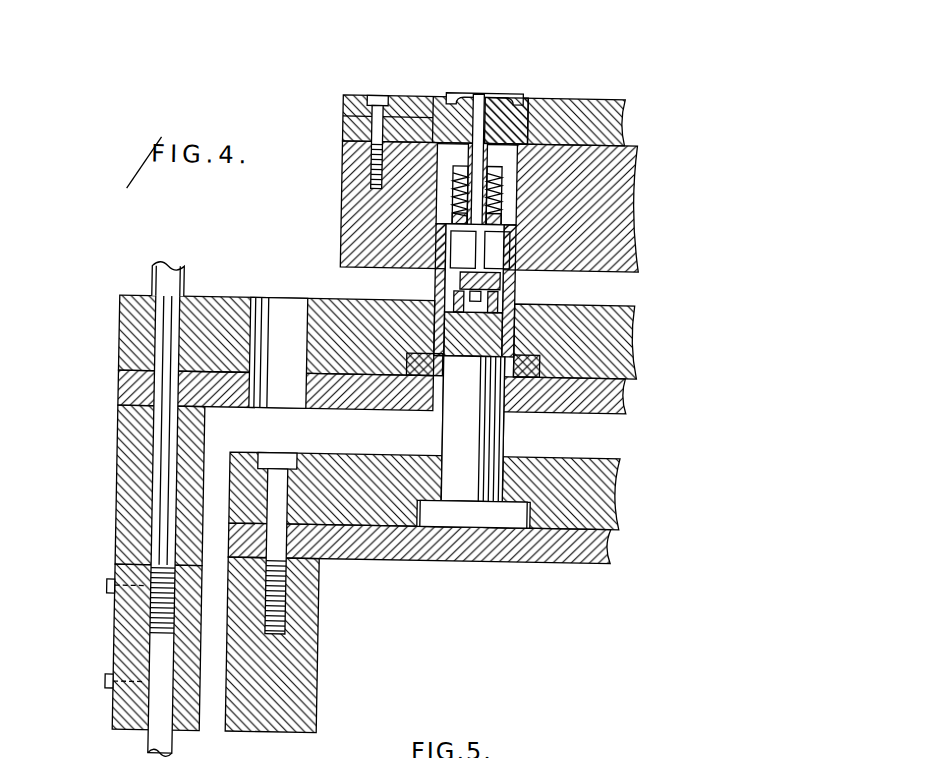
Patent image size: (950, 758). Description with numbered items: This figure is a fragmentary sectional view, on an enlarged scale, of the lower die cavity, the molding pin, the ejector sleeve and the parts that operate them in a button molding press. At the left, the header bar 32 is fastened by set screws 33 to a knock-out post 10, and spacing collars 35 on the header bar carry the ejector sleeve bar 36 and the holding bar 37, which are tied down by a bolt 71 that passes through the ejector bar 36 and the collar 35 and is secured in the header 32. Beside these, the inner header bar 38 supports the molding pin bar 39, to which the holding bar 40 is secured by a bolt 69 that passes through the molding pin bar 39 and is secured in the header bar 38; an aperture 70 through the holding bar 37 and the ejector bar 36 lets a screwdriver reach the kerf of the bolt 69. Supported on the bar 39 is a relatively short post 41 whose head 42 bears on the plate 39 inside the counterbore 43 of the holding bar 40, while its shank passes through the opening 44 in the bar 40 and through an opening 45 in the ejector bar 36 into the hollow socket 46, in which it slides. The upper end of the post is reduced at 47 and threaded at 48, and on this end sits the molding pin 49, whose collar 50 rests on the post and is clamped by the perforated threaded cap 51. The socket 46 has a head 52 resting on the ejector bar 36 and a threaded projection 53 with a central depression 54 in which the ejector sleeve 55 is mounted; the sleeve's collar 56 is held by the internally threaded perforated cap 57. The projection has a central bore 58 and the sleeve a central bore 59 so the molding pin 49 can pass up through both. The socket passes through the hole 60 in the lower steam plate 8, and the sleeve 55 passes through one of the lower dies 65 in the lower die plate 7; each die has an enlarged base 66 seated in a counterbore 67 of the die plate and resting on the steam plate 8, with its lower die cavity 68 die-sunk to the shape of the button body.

The lower die plate 7 is at (621, 110).
The lower steam plate 8 is at (630, 170).
The knock-out post 10 is at (150, 272).
The header bar 32 is at (110, 688).
The set screws 33 is at (110, 593).
The spacing collars 35 is at (118, 475).
The ejector sleeve bar 36 is at (118, 392).
The holding bar 37 is at (118, 333).
The inner header bar 38 is at (322, 650).
The molding pin bar 39 is at (605, 560).
The holding bar 40 is at (612, 483).
The post 41 is at (503, 433).
The head 42 is at (456, 528).
The counterbore 43 is at (405, 528).
The opening 44 is at (520, 474).
The opening 45 is at (436, 390).
The socket 46 is at (536, 330).
The reduced end 47 is at (470, 305).
The threaded portion 48 is at (452, 298).
The molding pin 49 is at (475, 268).
The collar 50 is at (484, 271).
The perforated threaded cap 51 is at (500, 289).
The head 52 is at (408, 376).
The threaded projection 53 is at (440, 212).
The central depression 54 is at (500, 214).
The ejector sleeve 55 is at (502, 184).
The collar 56 is at (449, 190).
The internally threaded perforated cap 57 is at (500, 185).
The central bore 58 is at (448, 226).
The central bore 59 is at (476, 96).
The hole 60 is at (516, 153).
The lower die 65 is at (520, 96).
The enlarged base 66 is at (420, 140).
The counterbore 67 is at (372, 116).
The lower die cavity 68 is at (455, 92).
The bolt 69 is at (280, 456).
The aperture 70 is at (268, 305).
The bolt 71 is at (160, 425).